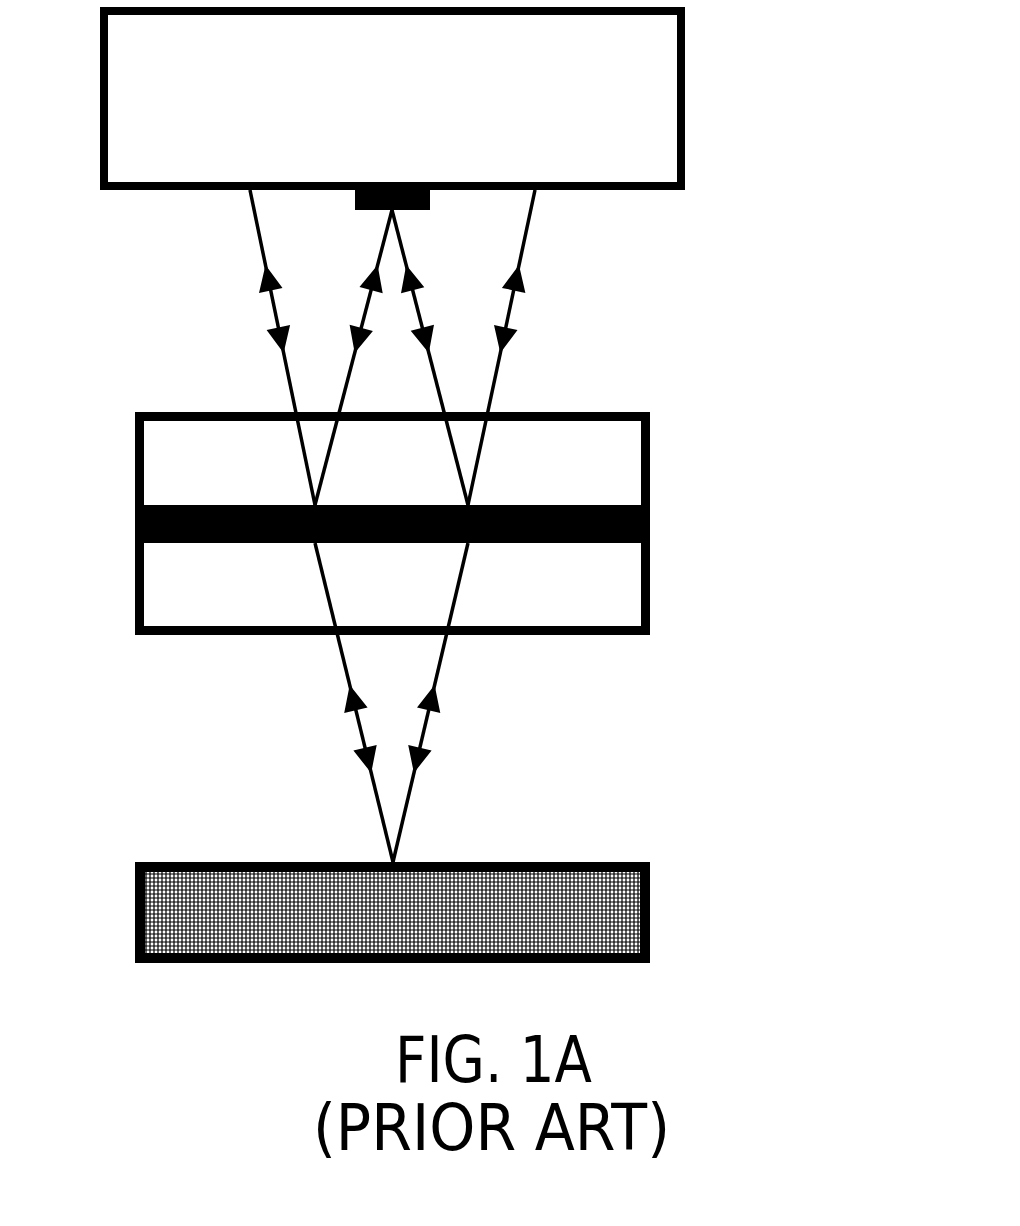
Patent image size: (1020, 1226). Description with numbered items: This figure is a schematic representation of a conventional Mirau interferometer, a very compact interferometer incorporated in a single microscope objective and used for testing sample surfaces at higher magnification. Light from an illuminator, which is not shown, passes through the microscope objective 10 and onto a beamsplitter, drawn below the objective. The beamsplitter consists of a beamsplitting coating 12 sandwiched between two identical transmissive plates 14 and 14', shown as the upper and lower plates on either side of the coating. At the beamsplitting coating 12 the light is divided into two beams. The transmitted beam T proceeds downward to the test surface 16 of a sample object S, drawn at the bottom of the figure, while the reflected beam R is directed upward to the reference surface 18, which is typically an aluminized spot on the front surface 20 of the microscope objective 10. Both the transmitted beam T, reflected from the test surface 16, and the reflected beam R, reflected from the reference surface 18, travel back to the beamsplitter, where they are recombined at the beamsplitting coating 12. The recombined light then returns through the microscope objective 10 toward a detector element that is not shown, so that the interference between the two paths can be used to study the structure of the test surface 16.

The microscope objective 10 is at (685, 143).
The front surface 20 is at (618, 190).
The reference surface 18 is at (415, 210).
The reflected beam R is at (418, 305).
The beamsplitting coating 12 is at (474, 527).
The transmissive plate 14 is at (444, 461).
The transmissive plate 14' is at (448, 590).
The transmitted beam T is at (422, 730).
The sample object S is at (650, 888).
The test surface 16 is at (513, 862).